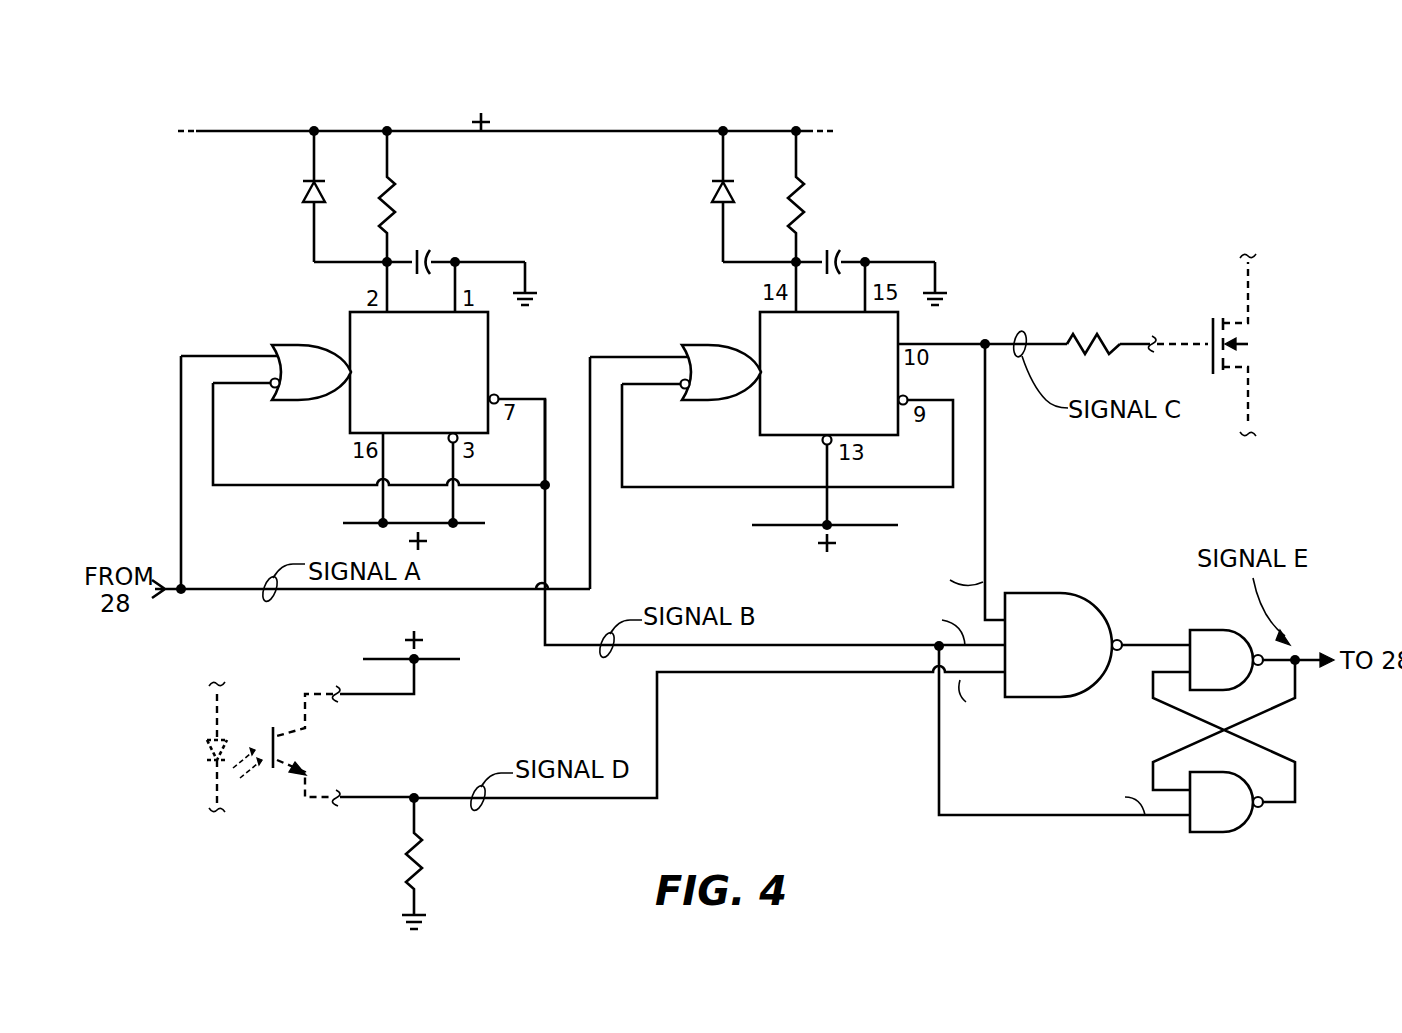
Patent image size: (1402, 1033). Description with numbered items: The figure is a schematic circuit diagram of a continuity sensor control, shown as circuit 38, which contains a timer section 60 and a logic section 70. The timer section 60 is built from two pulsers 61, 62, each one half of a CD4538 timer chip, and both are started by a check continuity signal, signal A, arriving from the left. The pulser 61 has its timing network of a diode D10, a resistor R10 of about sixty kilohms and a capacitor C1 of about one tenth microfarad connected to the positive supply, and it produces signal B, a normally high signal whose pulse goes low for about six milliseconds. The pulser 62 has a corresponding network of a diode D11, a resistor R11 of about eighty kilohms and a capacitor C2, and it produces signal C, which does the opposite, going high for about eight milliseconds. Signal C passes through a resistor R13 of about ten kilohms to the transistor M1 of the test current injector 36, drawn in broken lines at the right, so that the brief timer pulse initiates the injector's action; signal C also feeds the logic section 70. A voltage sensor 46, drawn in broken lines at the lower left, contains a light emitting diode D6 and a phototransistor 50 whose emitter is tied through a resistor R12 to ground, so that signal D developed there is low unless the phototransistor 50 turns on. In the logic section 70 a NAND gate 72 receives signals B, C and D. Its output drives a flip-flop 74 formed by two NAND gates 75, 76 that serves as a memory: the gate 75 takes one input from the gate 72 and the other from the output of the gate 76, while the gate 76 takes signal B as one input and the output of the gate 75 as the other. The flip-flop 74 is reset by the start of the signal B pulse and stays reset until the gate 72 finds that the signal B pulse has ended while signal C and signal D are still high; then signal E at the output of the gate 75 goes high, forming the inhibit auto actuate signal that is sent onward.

The diode D10 is at (304, 198).
The resistor R10 is at (395, 192).
The capacitor C1 is at (428, 253).
The timer section 60 is at (554, 356).
The pulser 61 is at (350, 416).
The diode D11 is at (714, 198).
The resistor R11 is at (804, 192).
The capacitor C2 is at (838, 253).
The pulser 62 is at (760, 416).
The circuit 38 is at (1085, 249).
The resistor R13 is at (1082, 338).
The transistor M1 is at (1220, 310).
The test current injector 36 is at (1234, 345).
The voltage sensor 46 is at (301, 727).
The light emitting diode D6 is at (208, 752).
The phototransistor 50 is at (298, 744).
The resistor R12 is at (406, 851).
The logic section 70 is at (1056, 639).
The NAND gate 72 is at (1035, 593).
The flip-flop 74 is at (1136, 733).
The NAND gate 75 is at (1216, 620).
The NAND gate 76 is at (1220, 833).